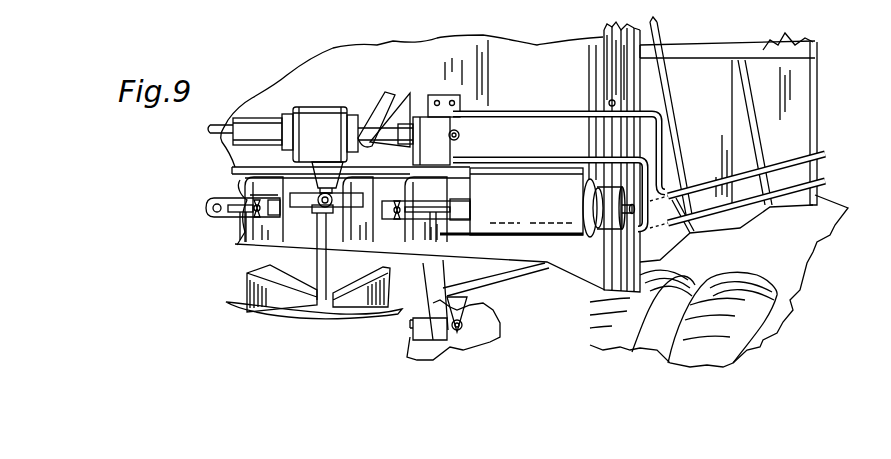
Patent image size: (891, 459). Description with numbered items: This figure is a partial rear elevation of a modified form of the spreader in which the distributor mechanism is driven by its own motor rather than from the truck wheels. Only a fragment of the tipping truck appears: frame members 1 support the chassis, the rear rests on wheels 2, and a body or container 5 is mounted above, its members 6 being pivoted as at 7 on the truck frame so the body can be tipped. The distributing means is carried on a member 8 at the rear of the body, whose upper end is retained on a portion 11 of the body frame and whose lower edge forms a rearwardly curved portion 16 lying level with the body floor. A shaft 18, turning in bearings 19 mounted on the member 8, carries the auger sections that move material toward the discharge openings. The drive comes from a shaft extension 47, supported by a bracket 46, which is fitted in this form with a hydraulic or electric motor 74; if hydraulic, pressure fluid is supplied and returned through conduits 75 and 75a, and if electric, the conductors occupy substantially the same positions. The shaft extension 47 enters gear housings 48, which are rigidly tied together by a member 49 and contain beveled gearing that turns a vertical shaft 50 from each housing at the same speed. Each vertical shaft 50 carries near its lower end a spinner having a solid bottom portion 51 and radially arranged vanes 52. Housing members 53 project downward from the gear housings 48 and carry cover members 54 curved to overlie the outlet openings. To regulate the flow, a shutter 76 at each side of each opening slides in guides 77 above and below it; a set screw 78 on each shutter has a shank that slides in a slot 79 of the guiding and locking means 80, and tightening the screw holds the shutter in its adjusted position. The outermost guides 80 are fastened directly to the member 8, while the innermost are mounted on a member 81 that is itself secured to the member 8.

The frame members 1 is at (417, 350).
The wheels 2 is at (593, 325).
The body or container 5 is at (698, 73).
The members 6 is at (467, 310).
The pivot 7 is at (480, 346).
The member 8 is at (498, 52).
The portion of the body frame 11 is at (630, 129).
The curved portion 16 is at (557, 225).
The shaft 18 is at (635, 209).
The bearings 19 is at (596, 197).
The bracket 46 is at (387, 100).
The shaft extension 47 is at (397, 133).
The gear housings 48 is at (318, 106).
The connecting member 49 is at (237, 142).
The vertical shaft 50 is at (317, 265).
The bottom portion 51 is at (313, 316).
The vanes 52 is at (280, 297).
The housing members 53 is at (343, 168).
The cover member 54 is at (352, 233).
The hydraulic or electric motor 74 is at (437, 113).
The conduit 75 is at (513, 111).
The conduit 75a is at (497, 157).
The shutter 76 is at (245, 190).
The guides 77 is at (233, 172).
The set screw 78 is at (259, 217).
The slots 79 is at (240, 214).
The guiding and locking means 80 is at (206, 208).
The member 81 is at (220, 216).